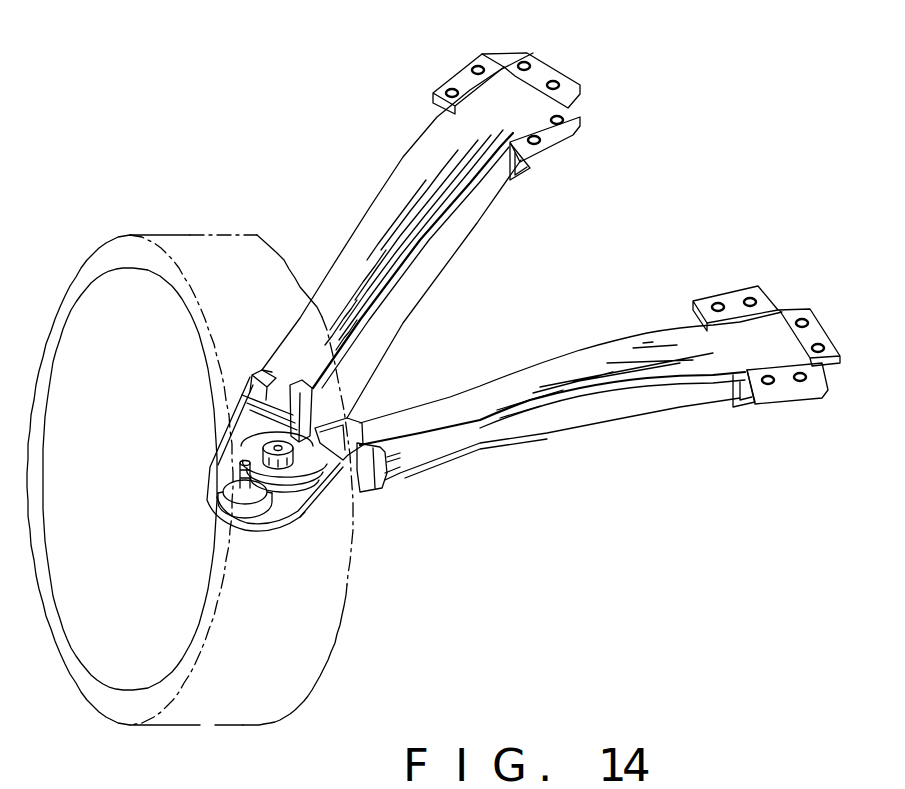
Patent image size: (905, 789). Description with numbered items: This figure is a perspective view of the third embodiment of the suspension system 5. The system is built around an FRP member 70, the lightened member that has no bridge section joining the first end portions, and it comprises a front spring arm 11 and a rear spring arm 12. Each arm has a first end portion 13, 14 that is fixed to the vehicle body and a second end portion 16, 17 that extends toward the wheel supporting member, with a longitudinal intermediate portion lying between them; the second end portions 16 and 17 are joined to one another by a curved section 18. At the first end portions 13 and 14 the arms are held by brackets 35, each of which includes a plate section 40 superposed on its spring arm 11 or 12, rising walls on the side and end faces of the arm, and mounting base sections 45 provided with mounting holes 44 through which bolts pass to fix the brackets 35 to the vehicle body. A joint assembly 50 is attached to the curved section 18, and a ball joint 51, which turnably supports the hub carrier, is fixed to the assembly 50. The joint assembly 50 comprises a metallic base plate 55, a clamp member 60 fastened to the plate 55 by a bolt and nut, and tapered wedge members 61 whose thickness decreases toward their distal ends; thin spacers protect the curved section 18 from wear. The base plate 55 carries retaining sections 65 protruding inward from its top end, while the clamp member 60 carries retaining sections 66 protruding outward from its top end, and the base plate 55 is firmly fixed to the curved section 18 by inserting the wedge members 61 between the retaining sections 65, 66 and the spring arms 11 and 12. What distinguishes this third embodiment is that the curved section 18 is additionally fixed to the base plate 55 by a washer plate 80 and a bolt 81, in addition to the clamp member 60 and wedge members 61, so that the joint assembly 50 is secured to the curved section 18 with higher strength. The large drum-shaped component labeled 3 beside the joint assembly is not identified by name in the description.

The wheel 3 is at (342, 615).
The suspension system 5 is at (367, 158).
The front spring arm 11 is at (360, 220).
The rear spring arm 12 is at (578, 352).
The first end portion 13 is at (553, 82).
The first end portion 14 is at (757, 350).
The second end portion 16 is at (290, 368).
The second end portion 17 is at (390, 440).
The curved section 18 is at (283, 517).
The bracket 35 is at (562, 170).
The plate section 40 is at (530, 173).
The mounting hole 44 is at (477, 68).
The mounting base section 45 is at (450, 92).
The joint assembly 50 is at (247, 543).
The ball joint 51 is at (218, 508).
The metallic base plate 55 is at (313, 520).
The clamp member 60 is at (322, 420).
The wedge member 61 is at (232, 410).
The retaining section 65 is at (252, 393).
The retaining section 66 is at (300, 367).
The FRP member 70 is at (582, 437).
The washer plate 80 is at (257, 438).
The bolt 81 is at (242, 468).